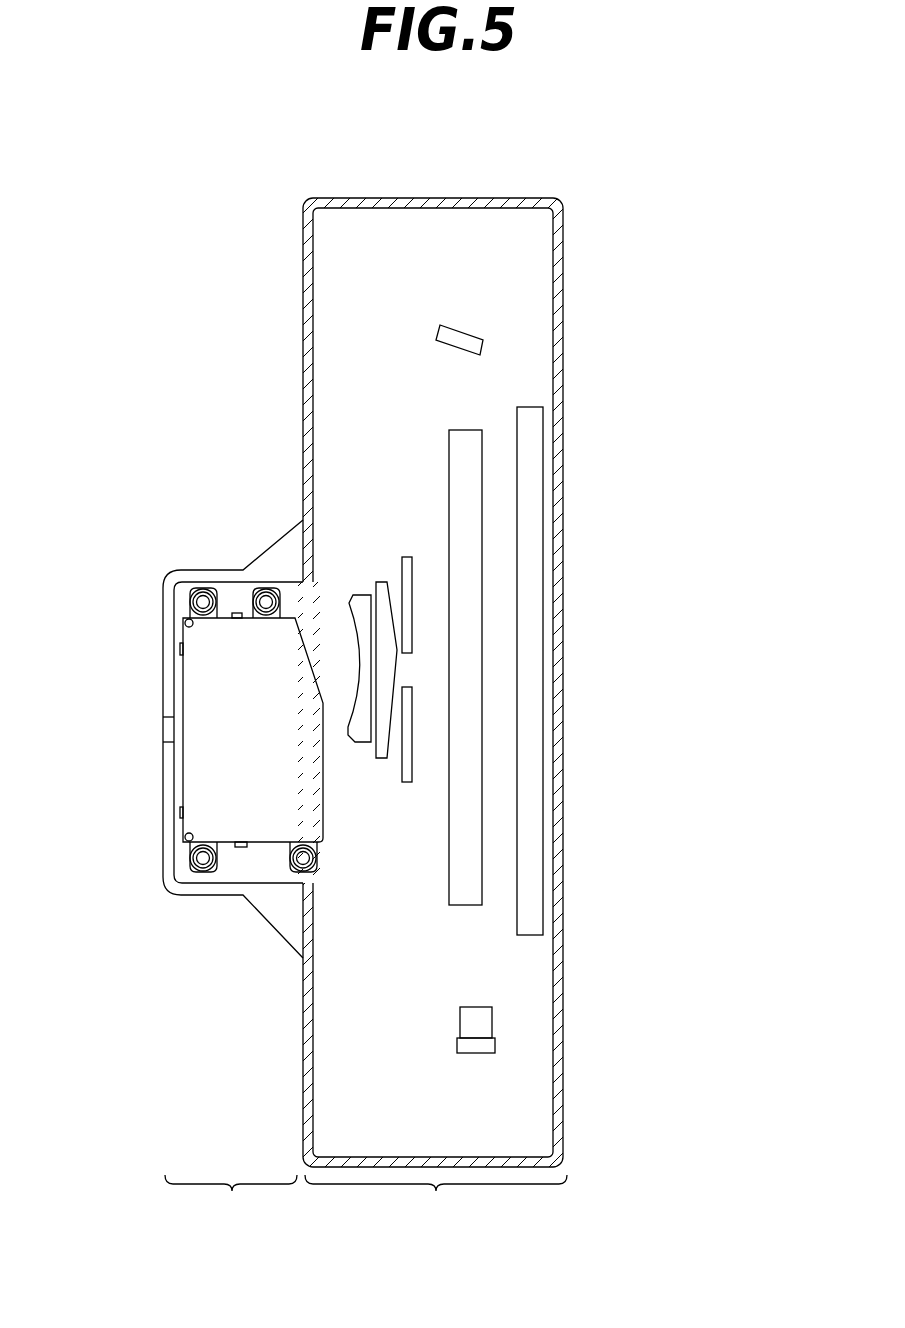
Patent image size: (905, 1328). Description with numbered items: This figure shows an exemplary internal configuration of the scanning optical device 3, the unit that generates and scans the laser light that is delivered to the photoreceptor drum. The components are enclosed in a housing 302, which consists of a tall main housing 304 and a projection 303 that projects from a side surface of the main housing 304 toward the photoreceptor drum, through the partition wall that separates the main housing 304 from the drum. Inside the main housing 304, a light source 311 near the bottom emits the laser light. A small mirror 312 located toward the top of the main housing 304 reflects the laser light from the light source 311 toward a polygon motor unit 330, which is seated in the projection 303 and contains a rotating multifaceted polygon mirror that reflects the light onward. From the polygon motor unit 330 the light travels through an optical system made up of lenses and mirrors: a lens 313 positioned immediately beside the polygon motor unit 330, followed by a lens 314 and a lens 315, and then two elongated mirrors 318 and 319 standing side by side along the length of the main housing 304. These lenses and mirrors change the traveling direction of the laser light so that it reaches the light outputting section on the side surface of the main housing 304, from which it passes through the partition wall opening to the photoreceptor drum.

The scanning optical device 3 is at (202, 185).
The housing 302 is at (500, 198).
The projection 303 is at (257, 1227).
The main housing 304 is at (460, 1227).
The light source 311 is at (483, 1022).
The mirror 312 is at (483, 340).
The lens 313 is at (360, 610).
The lens 314 is at (383, 590).
The lens 315 is at (412, 607).
The mirror 318 is at (467, 482).
The mirror 319 is at (530, 515).
The polygon motor unit 330 is at (228, 765).